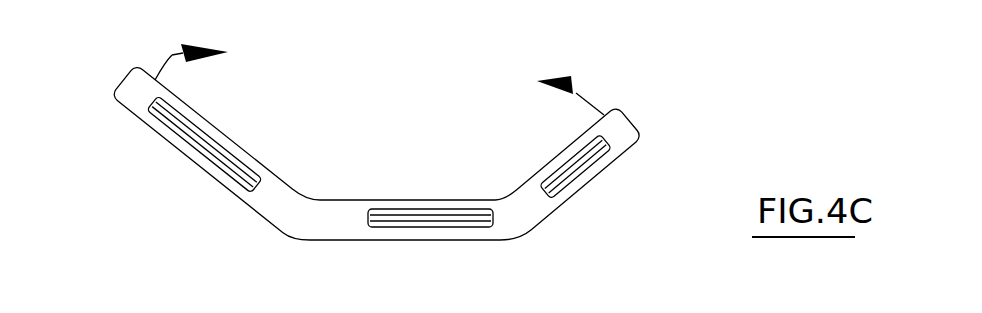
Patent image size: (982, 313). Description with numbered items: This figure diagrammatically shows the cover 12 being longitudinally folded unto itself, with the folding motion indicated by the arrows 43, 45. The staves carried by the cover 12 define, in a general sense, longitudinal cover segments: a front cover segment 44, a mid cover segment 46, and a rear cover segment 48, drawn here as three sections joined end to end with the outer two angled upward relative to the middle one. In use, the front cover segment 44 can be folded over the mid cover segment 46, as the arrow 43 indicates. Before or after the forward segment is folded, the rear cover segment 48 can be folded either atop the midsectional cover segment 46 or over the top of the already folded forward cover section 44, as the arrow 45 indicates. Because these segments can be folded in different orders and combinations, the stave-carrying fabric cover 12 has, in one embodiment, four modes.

The cover 12 is at (246, 205).
The arrow 43 is at (172, 55).
The front cover segment 44 is at (126, 107).
The arrow 45 is at (580, 90).
The mid cover segment 46 is at (499, 240).
The rear cover segment 48 is at (646, 139).